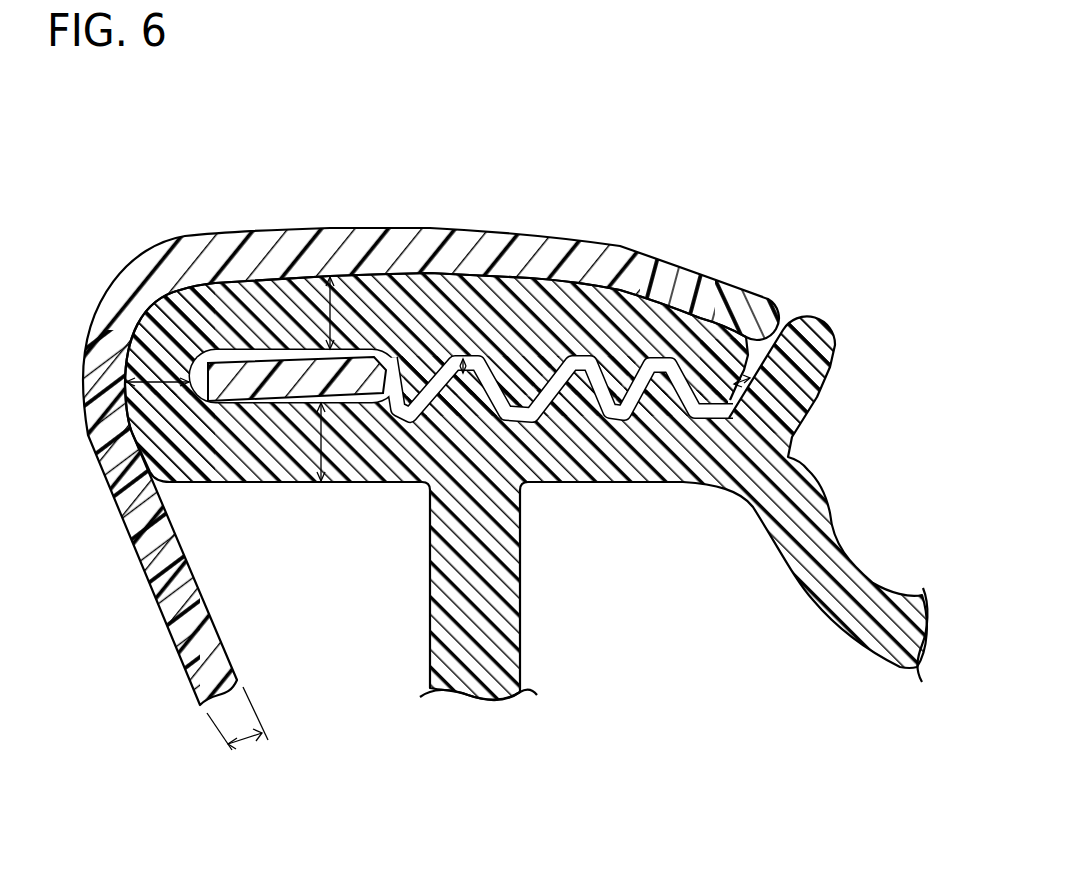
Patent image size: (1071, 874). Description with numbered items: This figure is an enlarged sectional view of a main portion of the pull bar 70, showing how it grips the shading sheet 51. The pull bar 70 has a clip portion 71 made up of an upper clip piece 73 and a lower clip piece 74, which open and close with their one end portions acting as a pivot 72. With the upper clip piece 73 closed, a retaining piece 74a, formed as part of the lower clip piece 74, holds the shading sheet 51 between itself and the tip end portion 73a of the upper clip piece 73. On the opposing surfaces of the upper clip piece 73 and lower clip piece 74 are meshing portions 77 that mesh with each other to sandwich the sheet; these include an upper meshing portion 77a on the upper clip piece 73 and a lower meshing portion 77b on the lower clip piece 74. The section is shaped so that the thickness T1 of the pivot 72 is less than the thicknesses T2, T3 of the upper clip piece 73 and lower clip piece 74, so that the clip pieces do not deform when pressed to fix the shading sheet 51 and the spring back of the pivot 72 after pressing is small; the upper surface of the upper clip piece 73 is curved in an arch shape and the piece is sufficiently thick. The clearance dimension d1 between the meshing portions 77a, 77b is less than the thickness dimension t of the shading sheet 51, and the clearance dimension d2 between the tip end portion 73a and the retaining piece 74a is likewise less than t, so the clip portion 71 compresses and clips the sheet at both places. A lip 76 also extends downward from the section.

The pull bar 70 is at (830, 474).
The clip portion 71 is at (216, 485).
The pivot 72 is at (155, 350).
The upper clip piece 73 is at (403, 290).
The tip end portion of the upper clip piece 73a is at (720, 343).
The lower clip piece 74 is at (380, 455).
The retaining piece 74a is at (822, 340).
The seal lip 76 is at (520, 620).
The meshing portions 77 is at (474, 386).
The upper meshing portion 77a is at (607, 372).
The lower meshing portion 77b is at (628, 393).
The shading sheet 51 is at (168, 631).
The thickness of the pivot T1 is at (128, 388).
The thickness of the upper clip piece T2 is at (330, 277).
The thickness of the lower clip piece T3 is at (320, 478).
The clearance dimension between both meshing portions d1 is at (463, 358).
The clearance dimension between the tip end portion and the retaining piece d2 is at (736, 380).
The thickness dimension of the shading sheet t is at (237, 734).